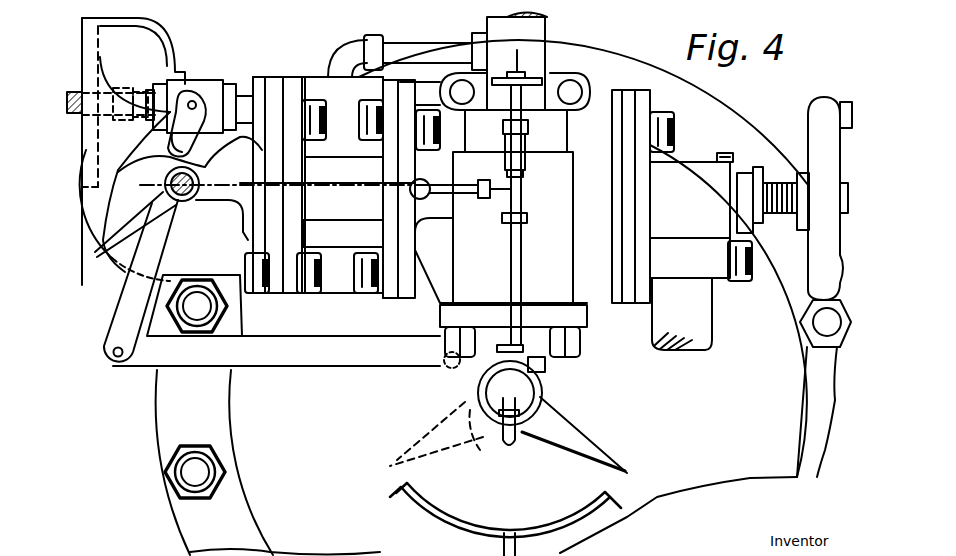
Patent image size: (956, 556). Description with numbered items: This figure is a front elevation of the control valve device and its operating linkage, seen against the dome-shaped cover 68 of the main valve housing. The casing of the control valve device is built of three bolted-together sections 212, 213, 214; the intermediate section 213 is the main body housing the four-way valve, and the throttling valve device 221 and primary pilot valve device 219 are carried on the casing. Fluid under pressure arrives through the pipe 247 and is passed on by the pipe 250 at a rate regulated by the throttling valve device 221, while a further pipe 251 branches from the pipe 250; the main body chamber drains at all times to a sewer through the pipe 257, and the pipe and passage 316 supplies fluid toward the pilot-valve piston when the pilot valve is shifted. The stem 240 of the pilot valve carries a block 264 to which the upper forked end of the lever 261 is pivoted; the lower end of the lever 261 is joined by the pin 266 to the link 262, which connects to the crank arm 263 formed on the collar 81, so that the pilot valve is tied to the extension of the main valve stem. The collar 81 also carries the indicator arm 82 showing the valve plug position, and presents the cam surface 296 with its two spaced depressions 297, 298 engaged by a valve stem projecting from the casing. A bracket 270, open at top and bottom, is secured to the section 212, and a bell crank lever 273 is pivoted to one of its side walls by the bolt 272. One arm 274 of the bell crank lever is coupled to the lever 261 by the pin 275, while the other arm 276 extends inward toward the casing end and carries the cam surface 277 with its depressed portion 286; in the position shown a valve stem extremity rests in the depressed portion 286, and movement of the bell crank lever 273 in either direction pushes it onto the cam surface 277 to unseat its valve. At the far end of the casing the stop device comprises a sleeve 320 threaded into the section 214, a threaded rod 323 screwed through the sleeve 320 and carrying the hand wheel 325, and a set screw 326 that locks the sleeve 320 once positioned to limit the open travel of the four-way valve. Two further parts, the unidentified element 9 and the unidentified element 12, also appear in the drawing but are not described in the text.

The bracket 9 is at (324, 231).
The valve stem 12 is at (484, 246).
The cover 68 is at (482, 297).
The collar 81 is at (524, 439).
The indicator arm 82 is at (578, 432).
The section 212 is at (342, 187).
The intermediate section 213 is at (528, 191).
The section 214 is at (701, 221).
The primary pilot valve device 219 is at (300, 197).
The throttling valve device 221 is at (512, 147).
The stem 240 is at (243, 97).
The pipe 247 is at (548, 20).
The pipe 250 is at (462, 188).
The pipe 251 is at (508, 278).
The pipe 257 is at (712, 320).
The lever 261 is at (128, 297).
The link 262 is at (266, 364).
The crank arm 263 is at (462, 374).
The block 264 is at (197, 80).
The pin 266 is at (114, 351).
The bracket 270 is at (112, 92).
The bolt 272 is at (191, 198).
The bell crank lever 273 is at (118, 252).
The arm 274 is at (135, 160).
The pin 275 is at (152, 135).
The arm 276 is at (258, 286).
The cam surface 277 is at (307, 292).
The depressed portion 286 is at (305, 172).
The cam surface 296 is at (545, 370).
The depression 297 is at (517, 352).
The depression 298 is at (470, 435).
The pipe and passage 316 is at (408, 48).
The sleeve 320 is at (757, 166).
The threaded rod 323 is at (786, 178).
The hand wheel 325 is at (822, 102).
The set screw 326 is at (724, 153).